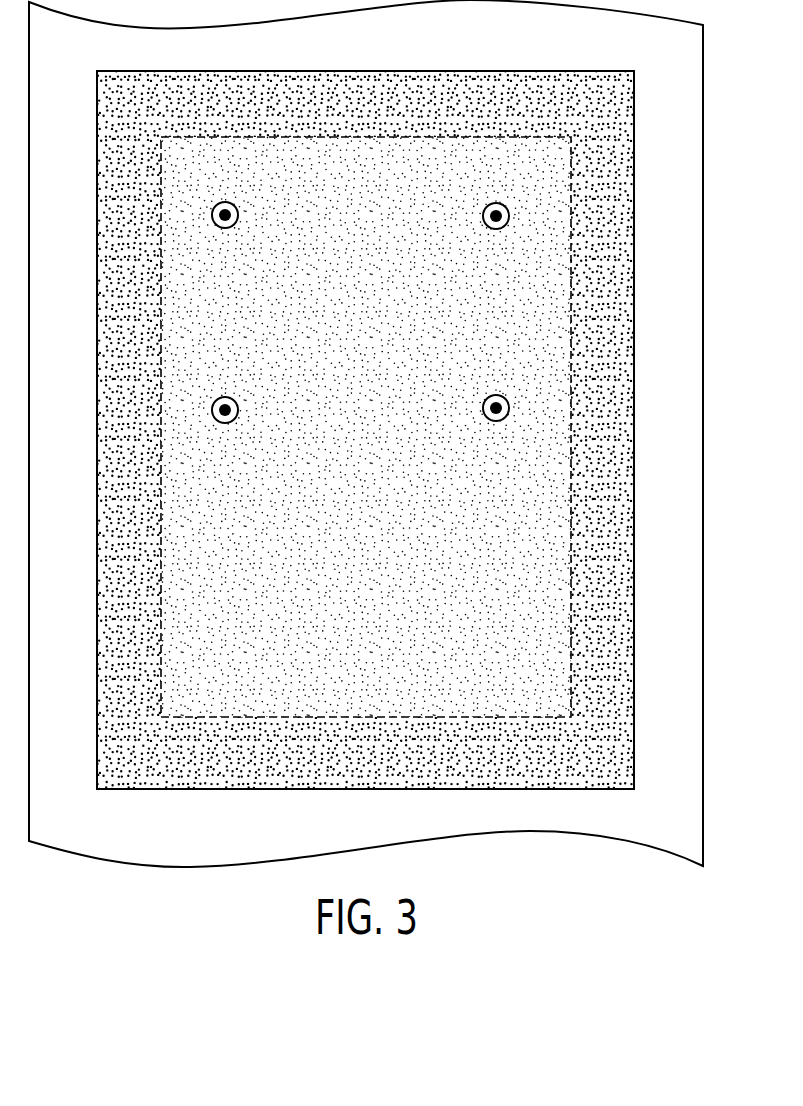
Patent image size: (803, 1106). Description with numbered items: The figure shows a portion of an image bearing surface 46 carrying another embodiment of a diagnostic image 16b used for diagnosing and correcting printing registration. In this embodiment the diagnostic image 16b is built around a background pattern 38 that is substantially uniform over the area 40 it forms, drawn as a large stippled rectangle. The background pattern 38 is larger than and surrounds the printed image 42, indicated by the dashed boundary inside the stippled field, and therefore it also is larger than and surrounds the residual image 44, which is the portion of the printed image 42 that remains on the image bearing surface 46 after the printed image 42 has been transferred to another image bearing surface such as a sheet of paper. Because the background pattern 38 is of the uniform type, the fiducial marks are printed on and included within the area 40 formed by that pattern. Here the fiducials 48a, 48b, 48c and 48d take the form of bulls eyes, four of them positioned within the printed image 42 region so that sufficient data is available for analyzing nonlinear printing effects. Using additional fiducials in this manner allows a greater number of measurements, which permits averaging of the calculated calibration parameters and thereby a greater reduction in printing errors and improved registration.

The background pattern 38 is at (393, 433).
The image bearing surface 46 is at (703, 196).
The area 40 is at (97, 650).
The printed image 42 is at (318, 427).
The residual image 44 is at (184, 469).
The diagnostic image 16b is at (314, 427).
The fiducial 48a is at (236, 207).
The fiducial 48b is at (485, 399).
The fiducial 48c is at (485, 207).
The fiducial 48d is at (236, 402).